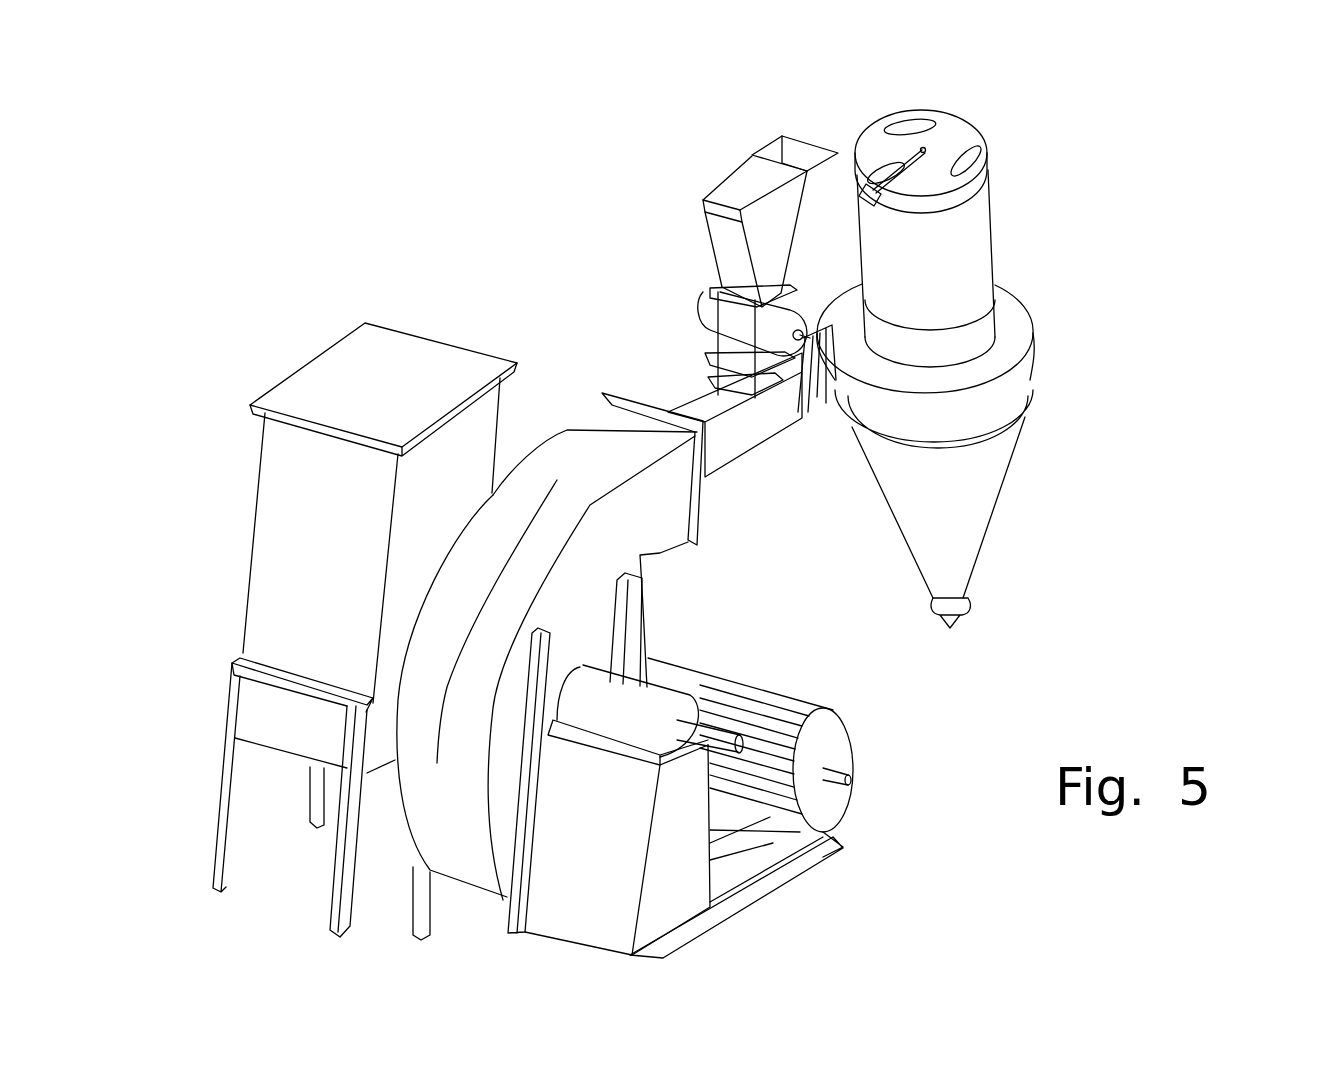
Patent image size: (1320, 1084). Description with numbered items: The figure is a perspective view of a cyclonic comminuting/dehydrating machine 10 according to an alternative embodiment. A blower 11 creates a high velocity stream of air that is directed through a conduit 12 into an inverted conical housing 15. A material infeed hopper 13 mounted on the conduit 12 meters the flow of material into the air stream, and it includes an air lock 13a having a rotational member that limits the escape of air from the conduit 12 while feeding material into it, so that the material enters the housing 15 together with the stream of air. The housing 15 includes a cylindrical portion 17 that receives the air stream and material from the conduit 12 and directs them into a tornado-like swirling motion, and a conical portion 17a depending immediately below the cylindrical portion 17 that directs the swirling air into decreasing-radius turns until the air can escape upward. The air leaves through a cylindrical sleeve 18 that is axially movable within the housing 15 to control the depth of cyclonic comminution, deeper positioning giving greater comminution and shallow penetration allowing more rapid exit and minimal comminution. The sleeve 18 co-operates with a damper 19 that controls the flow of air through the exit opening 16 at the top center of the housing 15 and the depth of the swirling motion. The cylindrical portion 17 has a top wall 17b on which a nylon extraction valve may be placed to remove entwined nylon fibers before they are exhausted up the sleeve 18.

The cyclonic comminuting/dehydrating machine 10 is at (565, 167).
The blower 11 is at (580, 448).
The conduit 12 is at (740, 438).
The material infeed hopper 13 is at (720, 267).
The air lock 13a is at (700, 333).
The inverted conical housing 15 is at (1078, 444).
The exit opening 16 is at (1025, 140).
The cylindrical portion 17 is at (1010, 388).
The conical portion 17a is at (977, 563).
The top wall 17b is at (1013, 325).
The cylindrical sleeve 18 is at (977, 263).
The damper 19 is at (950, 140).